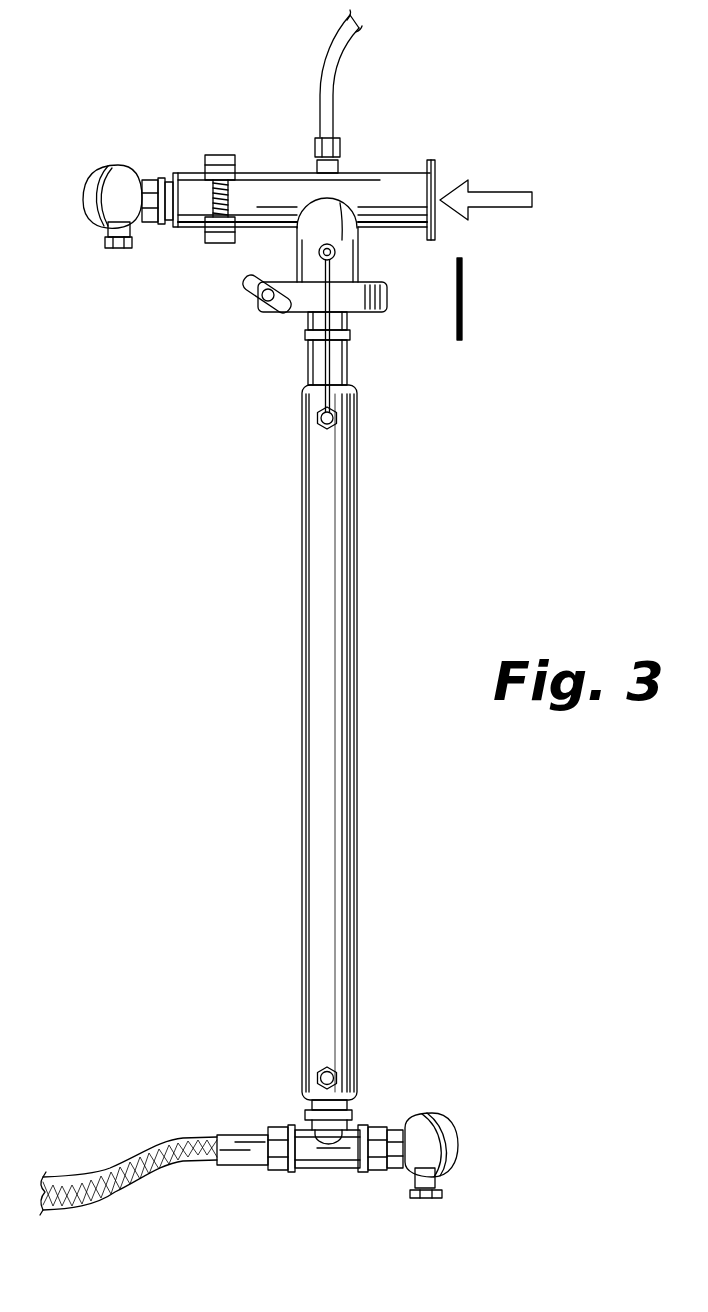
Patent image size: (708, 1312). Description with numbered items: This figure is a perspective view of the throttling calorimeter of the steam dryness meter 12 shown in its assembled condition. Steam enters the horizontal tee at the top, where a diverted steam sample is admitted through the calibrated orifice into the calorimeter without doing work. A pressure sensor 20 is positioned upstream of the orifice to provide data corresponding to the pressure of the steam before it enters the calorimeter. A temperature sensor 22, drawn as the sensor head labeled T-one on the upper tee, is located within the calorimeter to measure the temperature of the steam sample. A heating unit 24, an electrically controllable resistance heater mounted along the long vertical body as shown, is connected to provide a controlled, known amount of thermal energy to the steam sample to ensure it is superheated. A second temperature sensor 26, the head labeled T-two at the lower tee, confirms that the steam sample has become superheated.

The steam dryness meter 12 is at (265, 653).
The pressure sensor 20 is at (462, 298).
The temperature sensor 22 is at (107, 228).
The heating unit 24 is at (335, 415).
The second temperature sensor 26 is at (423, 1150).